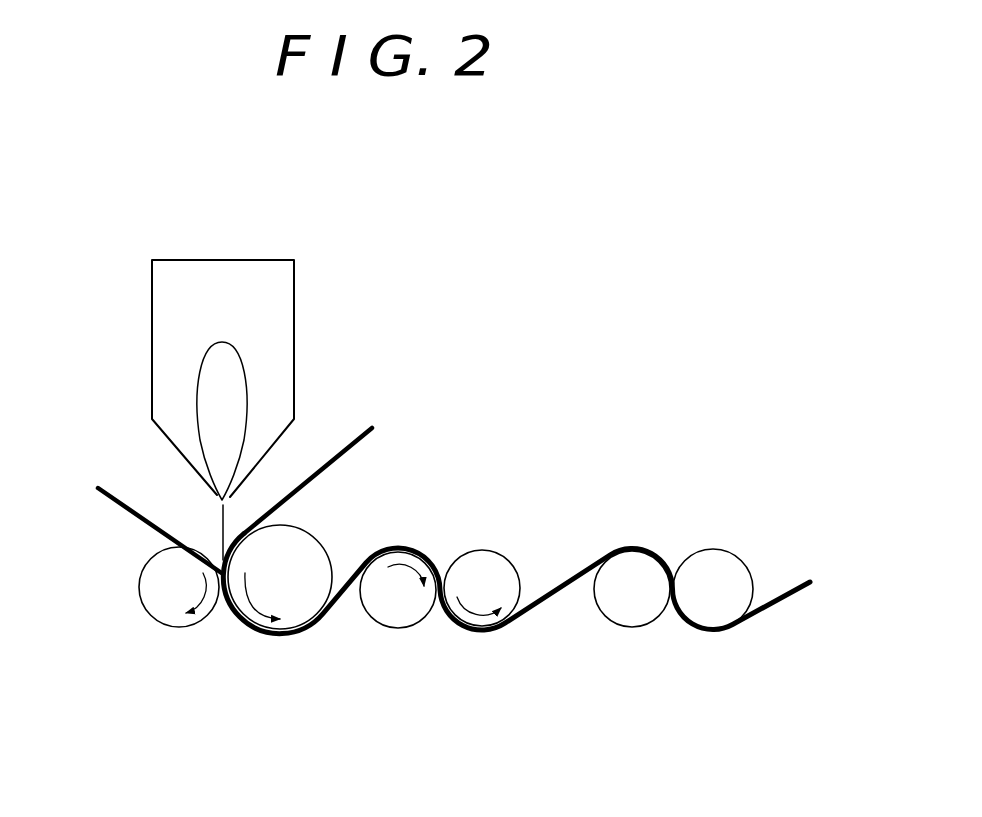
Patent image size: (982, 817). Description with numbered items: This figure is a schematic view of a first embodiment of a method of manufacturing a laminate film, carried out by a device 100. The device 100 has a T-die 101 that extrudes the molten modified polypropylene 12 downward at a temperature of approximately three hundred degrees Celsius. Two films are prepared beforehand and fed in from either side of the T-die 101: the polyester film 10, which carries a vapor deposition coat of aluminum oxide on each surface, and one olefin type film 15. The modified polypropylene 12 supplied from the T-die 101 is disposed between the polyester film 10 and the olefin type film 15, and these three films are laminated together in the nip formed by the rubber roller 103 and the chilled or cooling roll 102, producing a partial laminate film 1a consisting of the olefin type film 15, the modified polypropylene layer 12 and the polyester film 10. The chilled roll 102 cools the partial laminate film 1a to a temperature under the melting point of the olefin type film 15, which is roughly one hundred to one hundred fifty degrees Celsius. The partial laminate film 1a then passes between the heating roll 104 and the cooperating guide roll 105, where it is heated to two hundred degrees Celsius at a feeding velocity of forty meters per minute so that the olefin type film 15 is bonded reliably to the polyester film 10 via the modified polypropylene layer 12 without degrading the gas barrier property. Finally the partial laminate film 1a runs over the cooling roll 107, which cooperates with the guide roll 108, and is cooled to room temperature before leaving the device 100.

The device for manufacturing the laminate film 100 is at (330, 286).
The T-die 101 is at (248, 260).
The polyester film 10 is at (116, 491).
The modified polypropylene layer film 12 is at (223, 527).
The olefin type film 15 is at (338, 450).
The partial laminate film 1a is at (541, 607).
The chilled or cooling roll 102 is at (297, 557).
The rubber roller 103 is at (160, 600).
The heating roll 104 is at (398, 612).
The guide roll 105 is at (483, 573).
The cooling roll 107 is at (637, 578).
The guide roll 108 is at (718, 602).